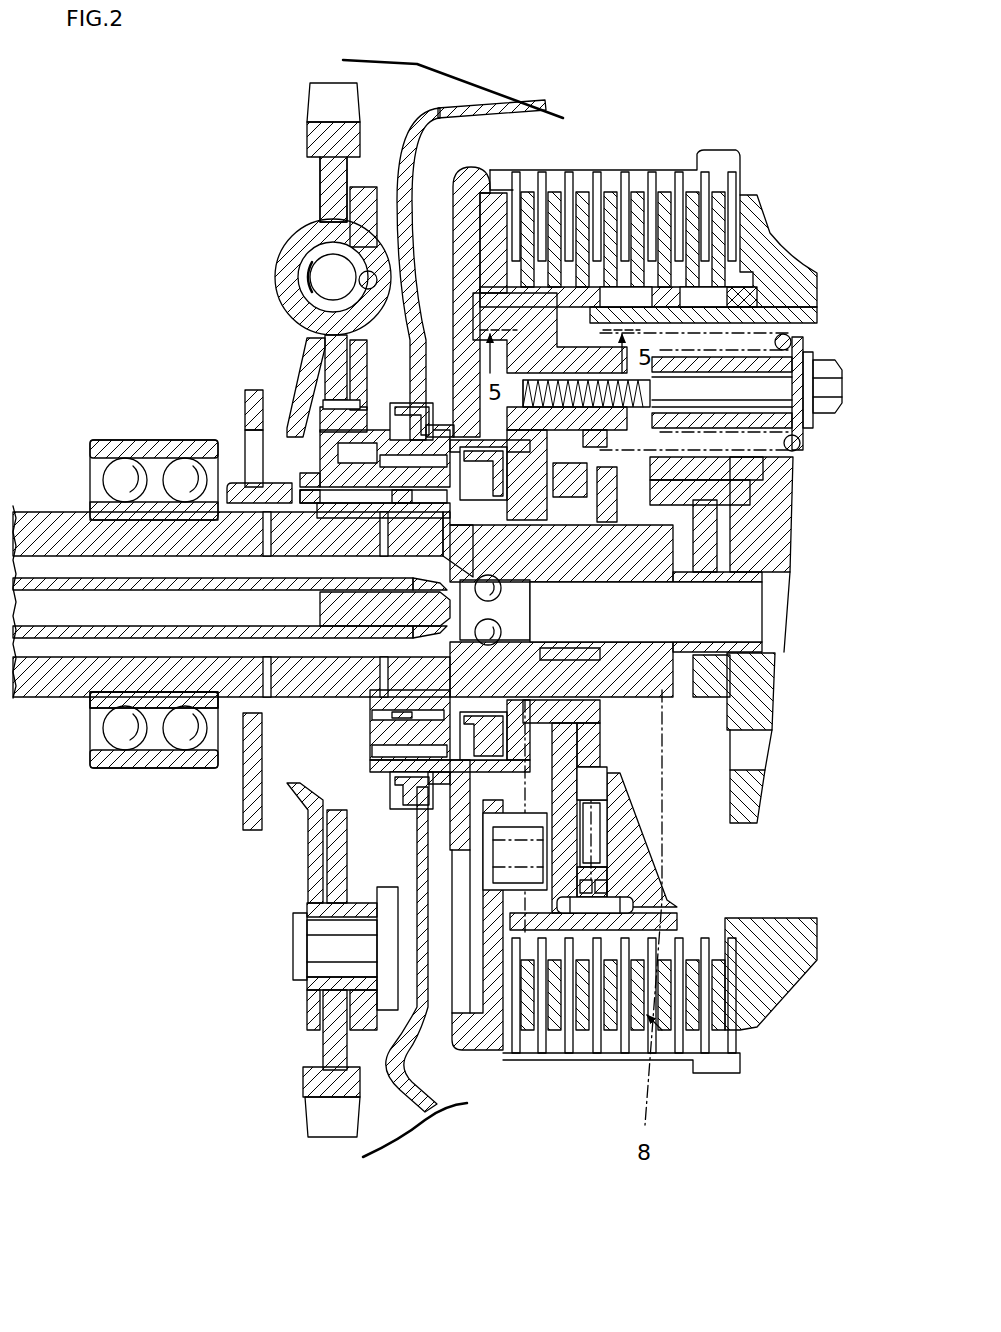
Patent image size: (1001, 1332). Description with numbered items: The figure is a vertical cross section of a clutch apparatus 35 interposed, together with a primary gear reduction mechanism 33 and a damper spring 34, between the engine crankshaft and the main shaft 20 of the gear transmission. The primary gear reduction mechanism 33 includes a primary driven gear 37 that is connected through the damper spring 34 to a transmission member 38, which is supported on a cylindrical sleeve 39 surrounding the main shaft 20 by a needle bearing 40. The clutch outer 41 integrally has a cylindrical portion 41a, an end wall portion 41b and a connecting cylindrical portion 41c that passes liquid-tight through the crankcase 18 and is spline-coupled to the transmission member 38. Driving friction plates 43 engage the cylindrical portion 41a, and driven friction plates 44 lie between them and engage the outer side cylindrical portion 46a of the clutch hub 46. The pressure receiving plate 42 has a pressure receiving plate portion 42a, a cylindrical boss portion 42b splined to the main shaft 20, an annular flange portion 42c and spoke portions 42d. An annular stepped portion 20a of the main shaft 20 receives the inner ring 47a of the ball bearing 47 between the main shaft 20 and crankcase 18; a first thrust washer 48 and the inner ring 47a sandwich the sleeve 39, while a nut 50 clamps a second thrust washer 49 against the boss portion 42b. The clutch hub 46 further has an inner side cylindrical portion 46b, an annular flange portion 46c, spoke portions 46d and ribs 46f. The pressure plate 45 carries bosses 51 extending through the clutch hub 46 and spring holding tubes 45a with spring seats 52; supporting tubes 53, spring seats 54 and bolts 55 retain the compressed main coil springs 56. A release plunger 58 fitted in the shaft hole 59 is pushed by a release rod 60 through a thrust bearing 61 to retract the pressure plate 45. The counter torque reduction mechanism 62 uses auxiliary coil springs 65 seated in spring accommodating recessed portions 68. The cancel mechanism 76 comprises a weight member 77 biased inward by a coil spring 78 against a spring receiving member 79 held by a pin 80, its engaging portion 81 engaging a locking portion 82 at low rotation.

The crankcase 18 is at (400, 1097).
The main shaft 20 is at (150, 740).
The annular stepped portion 20a is at (90, 467).
The primary gear reduction mechanism 33 is at (305, 140).
The damper spring 34 is at (305, 262).
The clutch apparatus 35 is at (463, 1060).
The primary driven gear 37 is at (318, 160).
The transmission member 38 is at (255, 800).
The cylindrical sleeve 39 is at (280, 478).
The needle bearing 40 is at (318, 630).
The clutch outer 41 is at (470, 165).
The cylindrical portion 41a is at (563, 170).
The end wall portion 41b is at (362, 178).
The connecting cylindrical portion 41c is at (320, 374).
The pressure receiving plate 42 is at (470, 227).
The pressure receiving plate portion 42a is at (492, 200).
The cylindrical boss portion 42b is at (573, 550).
The annular flange portion 42c is at (362, 445).
The spoke portions 42d is at (478, 440).
The driving friction plates 43 is at (620, 250).
The driven friction plates 44 is at (717, 1023).
The pressure plate 45 is at (765, 250).
The spring holding tubes 45a is at (747, 525).
The clutch hub 46 is at (630, 790).
The outer side cylindrical portion 46a is at (735, 923).
The inner side cylindrical portion 46b is at (605, 643).
The annular flange portion 46c is at (365, 282).
The spoke portions 46d is at (550, 777).
The ribs 46f is at (615, 900).
The ball bearing 47 is at (128, 470).
The inner ring 47a is at (100, 694).
The first thrust washer 48 is at (453, 697).
The second thrust washer 49 is at (623, 487).
The nut 50 is at (670, 707).
The boss 51 is at (680, 197).
The spring seat 52 is at (793, 460).
The supporting tubes 53 is at (745, 338).
The spring seats 54 is at (797, 335).
The bolts 55 is at (835, 415).
The main coil springs 56 is at (814, 393).
The release plunger 58 is at (730, 640).
The shaft hole 59 is at (128, 738).
The release rod 60 is at (60, 636).
The thrust bearing 61 is at (508, 610).
The counter torque reduction mechanism 62 is at (565, 352).
The auxiliary coil springs 65 is at (580, 897).
The spring accommodating recessed portions 68 is at (595, 830).
The cancel mechanism 76 is at (470, 850).
The weight member 77 is at (597, 878).
The coil spring 78 is at (600, 780).
The spring receiving member 79 is at (567, 1032).
The pin 80 is at (590, 893).
The engaging portion 81 is at (613, 733).
The locking portion 82 is at (530, 713).